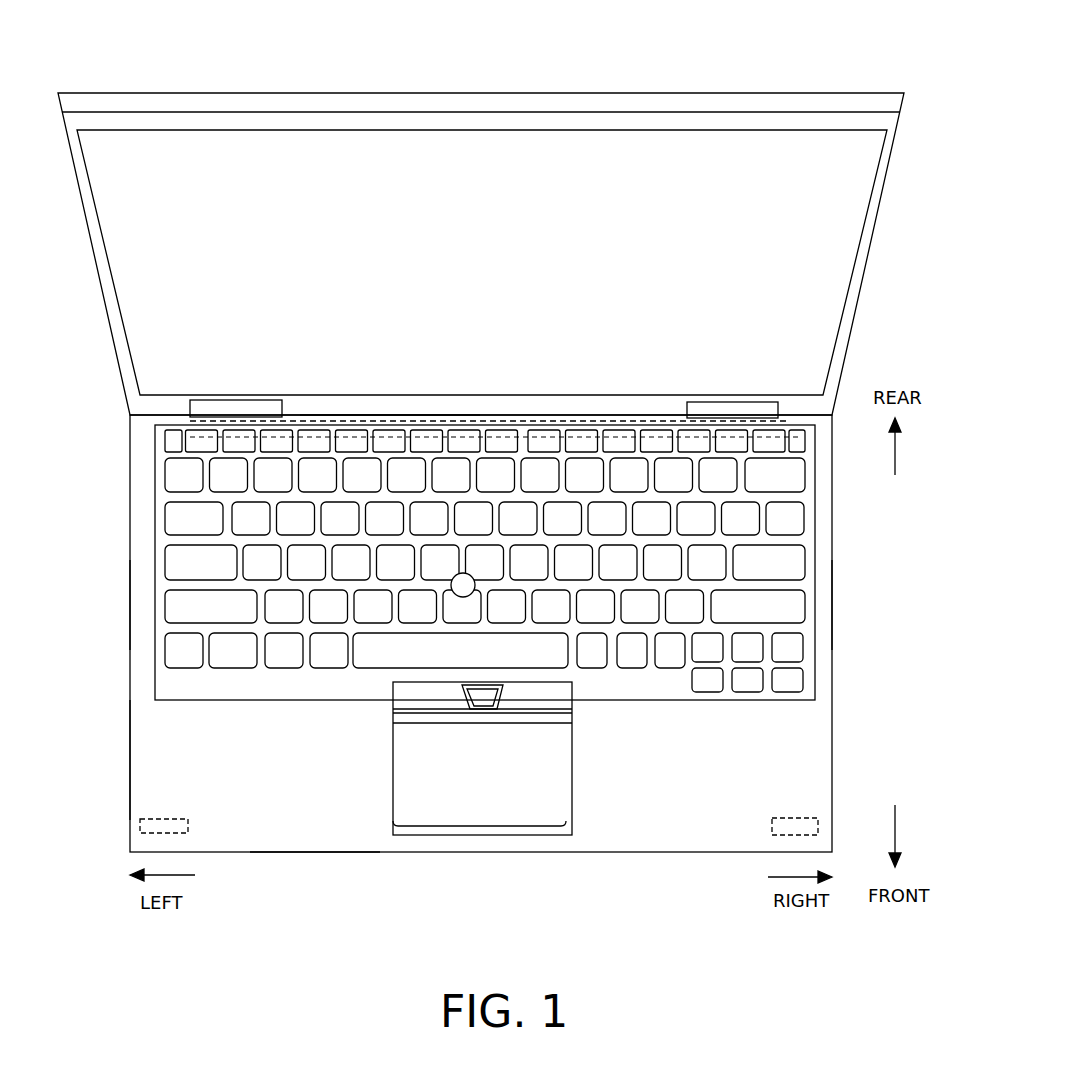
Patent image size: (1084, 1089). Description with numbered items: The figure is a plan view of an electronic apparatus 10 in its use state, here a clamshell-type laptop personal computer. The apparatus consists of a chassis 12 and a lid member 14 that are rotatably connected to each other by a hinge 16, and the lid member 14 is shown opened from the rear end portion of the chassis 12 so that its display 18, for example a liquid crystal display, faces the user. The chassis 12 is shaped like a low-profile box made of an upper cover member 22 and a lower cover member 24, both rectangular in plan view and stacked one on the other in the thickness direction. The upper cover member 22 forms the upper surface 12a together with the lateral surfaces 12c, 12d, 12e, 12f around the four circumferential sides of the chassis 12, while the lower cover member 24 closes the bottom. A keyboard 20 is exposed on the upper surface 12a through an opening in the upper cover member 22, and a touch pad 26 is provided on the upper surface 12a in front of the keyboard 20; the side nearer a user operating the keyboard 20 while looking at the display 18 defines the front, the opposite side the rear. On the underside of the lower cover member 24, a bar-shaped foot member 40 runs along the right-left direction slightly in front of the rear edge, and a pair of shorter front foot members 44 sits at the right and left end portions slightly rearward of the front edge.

The electronic apparatus 10 is at (78, 33).
The chassis 12 is at (908, 718).
The upper surface 12a is at (147, 757).
The lateral surface 12c is at (307, 852).
The lateral surface 12d is at (390, 413).
The lateral surface 12e is at (130, 605).
The lateral surface 12f is at (832, 605).
The lid member 14 is at (893, 179).
The hinge 16 is at (211, 400).
The display 18 is at (830, 251).
The keyboard 20 is at (150, 538).
The upper cover member 22 is at (803, 733).
The lower cover member 24 is at (832, 768).
The touch pad 26 is at (438, 813).
The foot member 40 is at (537, 419).
The front foot member 44 is at (140, 820).